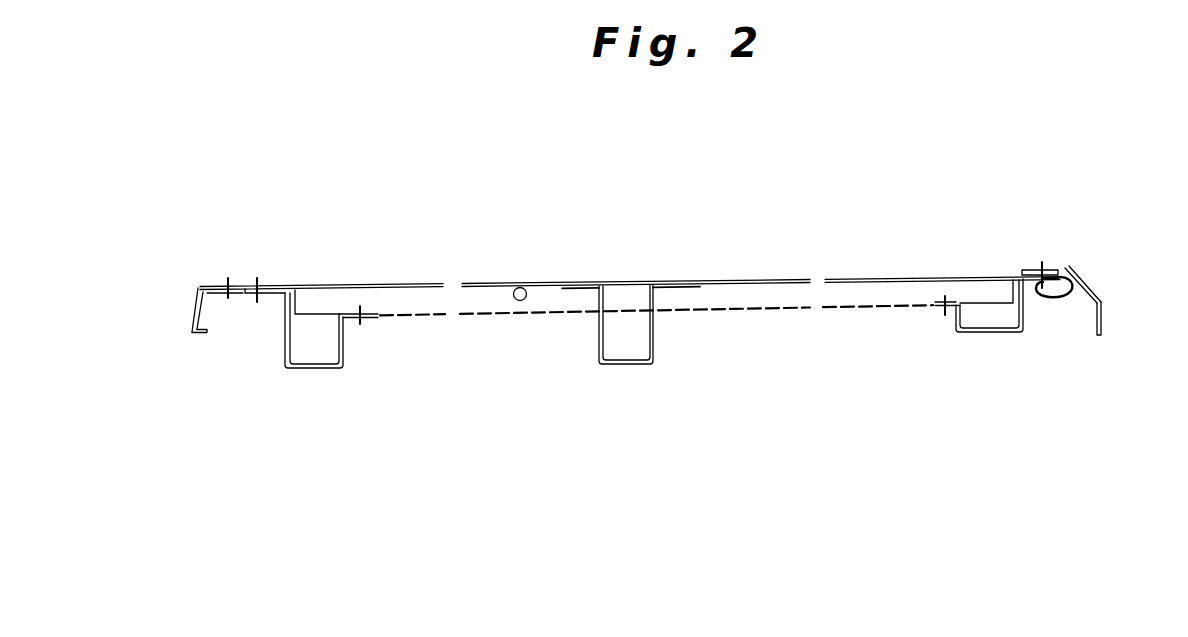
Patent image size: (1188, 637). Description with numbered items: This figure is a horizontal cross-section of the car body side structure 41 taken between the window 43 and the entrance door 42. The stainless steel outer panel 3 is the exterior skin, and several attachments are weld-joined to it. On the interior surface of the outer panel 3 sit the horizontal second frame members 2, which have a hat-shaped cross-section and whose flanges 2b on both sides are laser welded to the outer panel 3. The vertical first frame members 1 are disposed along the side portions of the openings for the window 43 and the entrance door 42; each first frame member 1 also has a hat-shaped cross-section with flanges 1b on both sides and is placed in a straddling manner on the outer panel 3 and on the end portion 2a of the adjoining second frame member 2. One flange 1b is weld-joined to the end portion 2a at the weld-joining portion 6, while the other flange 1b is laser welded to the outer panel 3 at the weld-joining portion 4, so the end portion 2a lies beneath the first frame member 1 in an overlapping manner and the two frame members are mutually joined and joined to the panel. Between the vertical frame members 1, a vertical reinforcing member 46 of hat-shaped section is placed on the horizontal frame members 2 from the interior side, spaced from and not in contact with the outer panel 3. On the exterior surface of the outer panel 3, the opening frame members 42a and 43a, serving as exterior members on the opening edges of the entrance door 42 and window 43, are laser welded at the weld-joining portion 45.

The first frame member 1 is at (284, 352).
The flange 1b is at (353, 327).
The second frame member 2 is at (714, 291).
The end portion 2a is at (316, 310).
The flange 2b is at (513, 283).
The outer panel 3 is at (567, 284).
The weld-joining portion 4 is at (258, 283).
The weld-joining portion 6 is at (360, 312).
The car body side structure 41 is at (806, 231).
The entrance door 42 is at (1173, 308).
The opening frame member 42a is at (1100, 300).
The window 43 is at (163, 320).
The opening frame member 43a is at (192, 311).
The weld-joining portion 45 is at (216, 292).
The vertical reinforcing member 46 is at (654, 362).